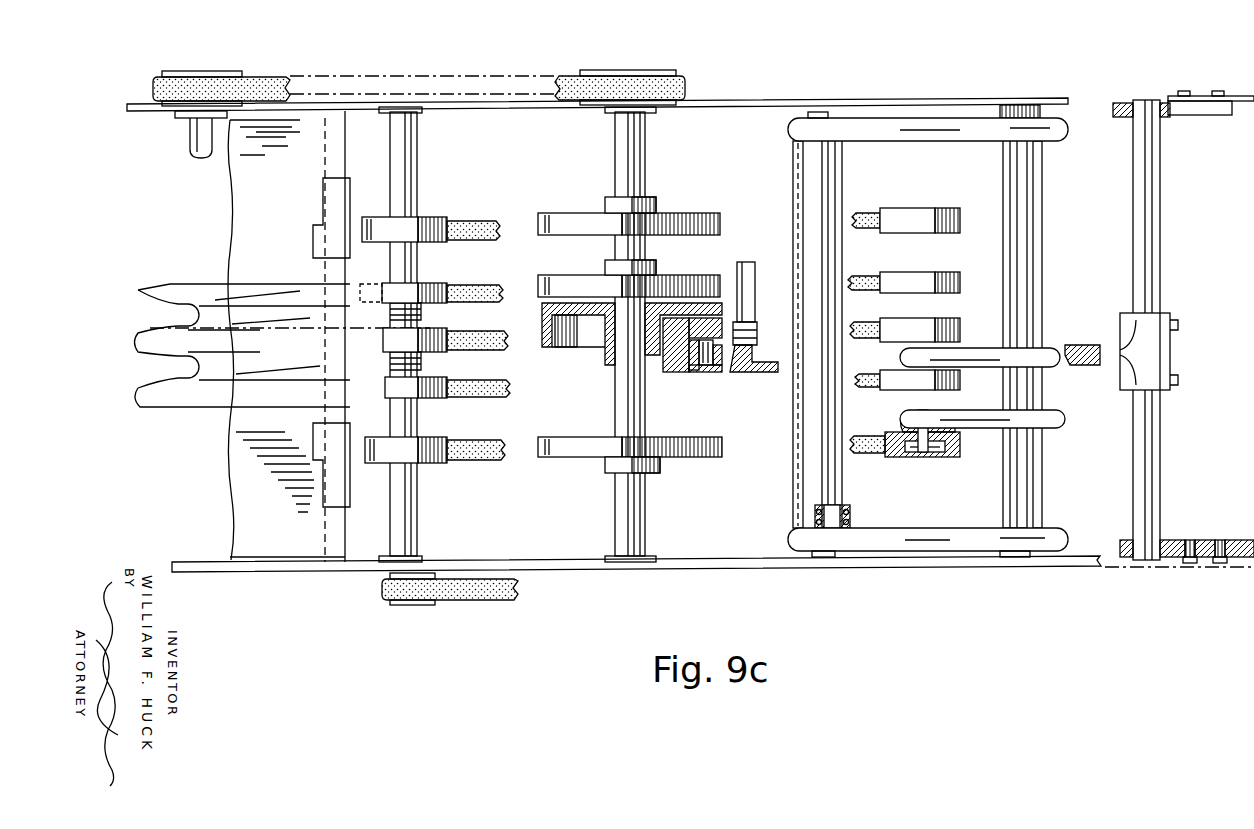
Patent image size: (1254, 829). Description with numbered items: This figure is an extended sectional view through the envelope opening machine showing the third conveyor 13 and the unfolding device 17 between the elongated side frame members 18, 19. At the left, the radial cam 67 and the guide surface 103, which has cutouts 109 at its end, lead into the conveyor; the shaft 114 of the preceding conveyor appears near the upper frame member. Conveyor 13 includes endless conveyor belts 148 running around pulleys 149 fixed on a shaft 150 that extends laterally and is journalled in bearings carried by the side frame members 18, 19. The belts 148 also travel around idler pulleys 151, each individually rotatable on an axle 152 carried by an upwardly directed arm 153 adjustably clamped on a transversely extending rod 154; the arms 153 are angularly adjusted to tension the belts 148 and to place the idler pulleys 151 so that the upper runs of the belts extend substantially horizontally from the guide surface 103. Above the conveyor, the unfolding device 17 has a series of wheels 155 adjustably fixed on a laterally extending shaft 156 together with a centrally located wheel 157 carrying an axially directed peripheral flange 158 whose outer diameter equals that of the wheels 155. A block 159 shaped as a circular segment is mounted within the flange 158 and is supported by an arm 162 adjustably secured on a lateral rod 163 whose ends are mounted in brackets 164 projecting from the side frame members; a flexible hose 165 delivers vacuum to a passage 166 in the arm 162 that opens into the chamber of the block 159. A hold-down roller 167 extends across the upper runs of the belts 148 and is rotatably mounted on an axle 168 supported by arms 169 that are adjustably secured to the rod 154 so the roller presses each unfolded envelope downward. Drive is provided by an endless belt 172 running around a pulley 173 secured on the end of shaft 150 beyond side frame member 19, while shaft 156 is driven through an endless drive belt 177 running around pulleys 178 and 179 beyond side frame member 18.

The third conveyor 13 is at (484, 478).
The unfolding device 17 is at (595, 400).
The side frame member 18 is at (742, 98).
The side frame member 19 is at (744, 566).
The radial cam 67 is at (242, 240).
The guide surface 103 is at (216, 396).
The cutouts 109 is at (155, 312).
The shaft 114 is at (197, 138).
The conveyor belts 148 is at (480, 232).
The pulleys 149 is at (425, 223).
The shaft 150 is at (413, 157).
The idler pulleys 151 is at (918, 212).
The axle 152 is at (921, 410).
The arm 153 is at (998, 362).
The rod 154 is at (1025, 476).
The wheels 155 is at (678, 216).
The shaft 156 is at (635, 163).
The wheel 157 is at (602, 318).
The peripheral flange 158 is at (548, 346).
The block 159 is at (668, 350).
The arm 162 is at (742, 360).
The rod 163 is at (1160, 240).
The brackets 164 is at (1185, 113).
The flexible hose 165 is at (778, 254).
The passage 166 is at (720, 365).
The hold-down roller 167 is at (833, 165).
The axle 168 is at (800, 512).
The arms 169 is at (905, 128).
The endless belt 172 is at (460, 592).
The pulley 173 is at (384, 600).
The drive belt 177 is at (274, 86).
The pulley 178 is at (190, 52).
The pulley 179 is at (594, 74).